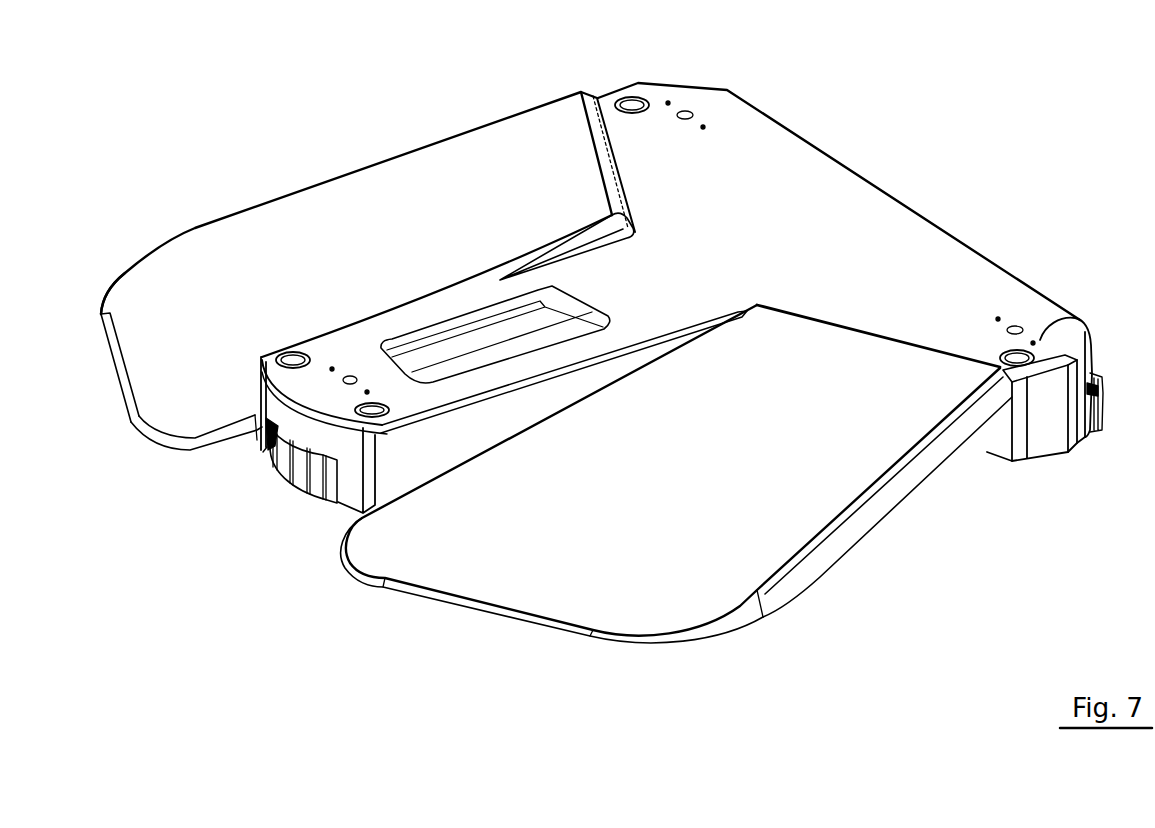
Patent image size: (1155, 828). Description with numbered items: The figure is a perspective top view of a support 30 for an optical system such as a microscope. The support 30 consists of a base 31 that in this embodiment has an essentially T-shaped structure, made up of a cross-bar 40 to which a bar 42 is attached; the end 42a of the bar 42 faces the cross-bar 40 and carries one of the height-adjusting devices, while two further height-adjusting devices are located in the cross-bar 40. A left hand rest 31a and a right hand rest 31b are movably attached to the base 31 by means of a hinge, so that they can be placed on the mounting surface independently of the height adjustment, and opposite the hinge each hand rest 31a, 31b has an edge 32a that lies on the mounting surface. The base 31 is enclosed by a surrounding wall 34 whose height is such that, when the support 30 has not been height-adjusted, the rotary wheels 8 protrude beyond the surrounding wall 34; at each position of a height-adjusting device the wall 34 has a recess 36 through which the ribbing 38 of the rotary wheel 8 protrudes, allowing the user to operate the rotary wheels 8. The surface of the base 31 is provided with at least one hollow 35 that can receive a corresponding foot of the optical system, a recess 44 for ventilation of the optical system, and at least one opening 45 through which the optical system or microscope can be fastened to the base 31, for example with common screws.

The support 30 is at (452, 88).
The base 31 is at (847, 167).
The left hand rest 31a is at (401, 254).
The right hand rest 31b is at (713, 492).
The edge 32a is at (104, 351).
The surrounding wall 34 is at (528, 404).
The hollow 35 is at (620, 102).
The recess 36 is at (265, 452).
The ribbing 38 is at (312, 488).
The cross-bar 40 is at (882, 248).
The bar 42 is at (588, 267).
The end of bar 42a is at (268, 407).
The recess 44 is at (592, 300).
The opening 45 is at (678, 120).
The rotary wheel 8 is at (292, 490).